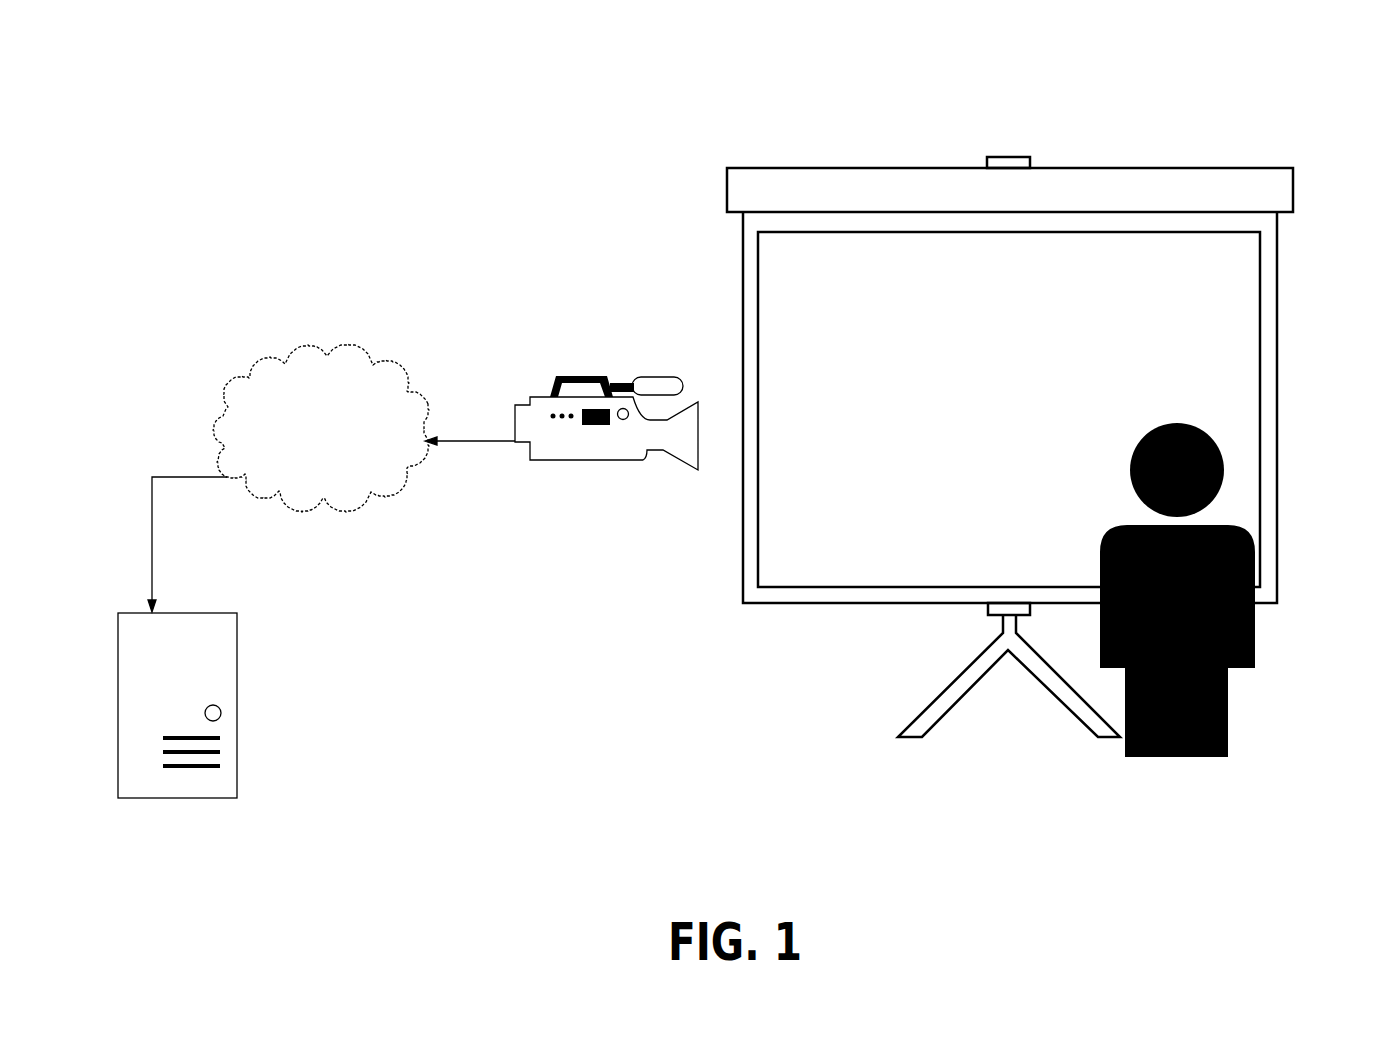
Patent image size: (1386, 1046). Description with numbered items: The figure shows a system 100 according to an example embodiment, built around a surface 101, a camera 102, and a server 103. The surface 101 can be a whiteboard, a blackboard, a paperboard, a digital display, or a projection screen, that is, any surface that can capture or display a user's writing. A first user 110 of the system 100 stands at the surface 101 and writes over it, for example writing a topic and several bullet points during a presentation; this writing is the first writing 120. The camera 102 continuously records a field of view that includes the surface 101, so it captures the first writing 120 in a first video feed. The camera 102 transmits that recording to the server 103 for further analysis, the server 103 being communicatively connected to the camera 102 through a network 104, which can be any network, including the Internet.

The system 100 is at (628, 177).
The surface 101 is at (785, 612).
The camera 102 is at (567, 480).
The server 103 is at (252, 687).
The network 104 is at (321, 428).
The first user 110 is at (1170, 760).
The first writing 120 is at (1107, 402).